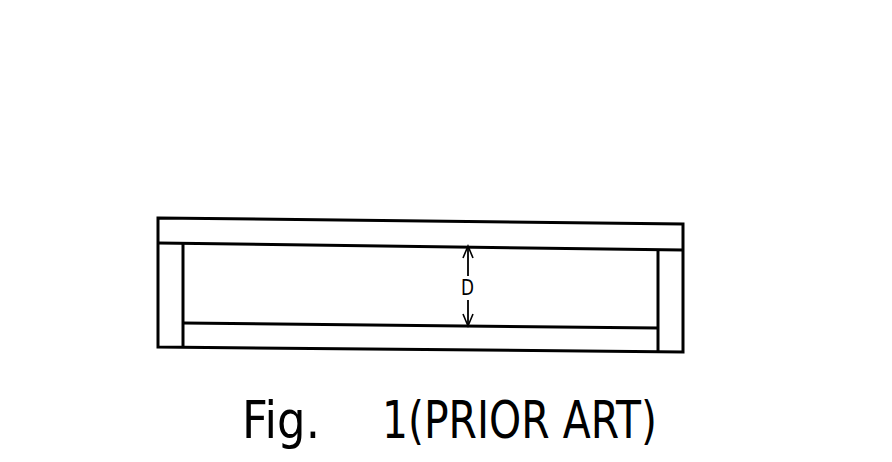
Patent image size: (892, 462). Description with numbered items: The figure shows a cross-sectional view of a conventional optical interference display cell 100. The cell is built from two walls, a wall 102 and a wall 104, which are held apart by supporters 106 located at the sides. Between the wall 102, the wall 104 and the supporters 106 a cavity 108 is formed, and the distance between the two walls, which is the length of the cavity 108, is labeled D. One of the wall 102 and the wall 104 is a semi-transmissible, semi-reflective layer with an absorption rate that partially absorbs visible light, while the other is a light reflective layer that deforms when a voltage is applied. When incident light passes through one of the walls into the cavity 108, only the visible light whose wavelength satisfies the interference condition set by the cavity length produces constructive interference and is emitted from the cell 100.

The optical interference display cell 100 is at (427, 145).
The wall 102 is at (637, 339).
The wall 104 is at (668, 239).
The supporters 106 is at (167, 285).
The cavity 108 is at (648, 293).